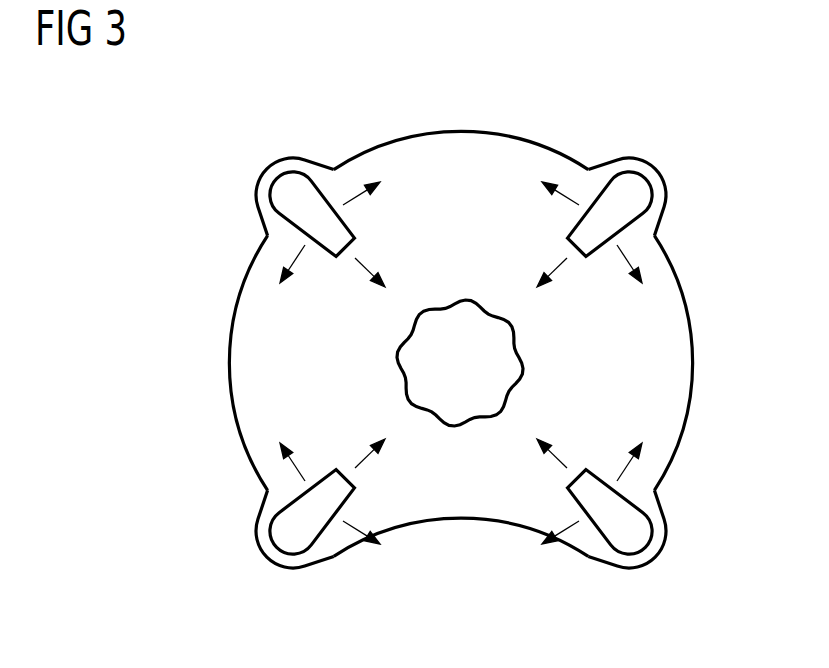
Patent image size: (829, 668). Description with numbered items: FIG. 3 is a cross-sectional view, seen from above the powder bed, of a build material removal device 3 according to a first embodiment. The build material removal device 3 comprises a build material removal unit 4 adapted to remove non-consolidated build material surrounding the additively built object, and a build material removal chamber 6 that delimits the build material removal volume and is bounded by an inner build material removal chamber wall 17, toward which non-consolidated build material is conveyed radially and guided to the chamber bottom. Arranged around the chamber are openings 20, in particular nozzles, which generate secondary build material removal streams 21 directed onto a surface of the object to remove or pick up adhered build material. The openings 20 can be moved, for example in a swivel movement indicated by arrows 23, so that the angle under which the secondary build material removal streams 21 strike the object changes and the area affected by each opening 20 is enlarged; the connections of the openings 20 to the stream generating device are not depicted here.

The build material removal device 3 is at (344, 83).
The build material removal unit 4 is at (457, 343).
The build material removal chamber 6 is at (457, 323).
The inner build material removal chamber wall 17 is at (692, 365).
The openings 20 is at (277, 182).
The secondary build material removal streams 21 is at (367, 270).
The arrows 23 is at (345, 205).